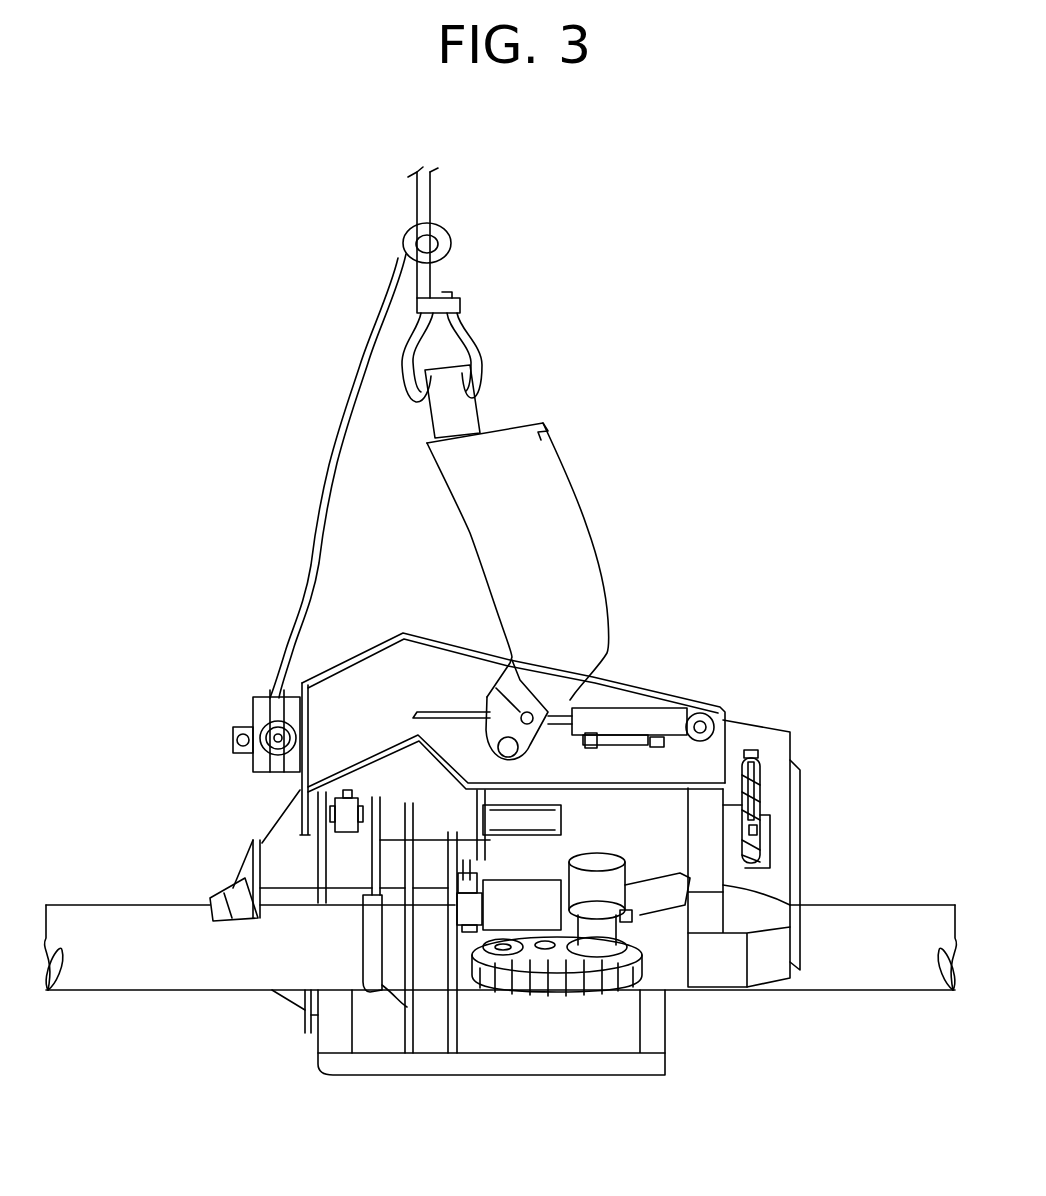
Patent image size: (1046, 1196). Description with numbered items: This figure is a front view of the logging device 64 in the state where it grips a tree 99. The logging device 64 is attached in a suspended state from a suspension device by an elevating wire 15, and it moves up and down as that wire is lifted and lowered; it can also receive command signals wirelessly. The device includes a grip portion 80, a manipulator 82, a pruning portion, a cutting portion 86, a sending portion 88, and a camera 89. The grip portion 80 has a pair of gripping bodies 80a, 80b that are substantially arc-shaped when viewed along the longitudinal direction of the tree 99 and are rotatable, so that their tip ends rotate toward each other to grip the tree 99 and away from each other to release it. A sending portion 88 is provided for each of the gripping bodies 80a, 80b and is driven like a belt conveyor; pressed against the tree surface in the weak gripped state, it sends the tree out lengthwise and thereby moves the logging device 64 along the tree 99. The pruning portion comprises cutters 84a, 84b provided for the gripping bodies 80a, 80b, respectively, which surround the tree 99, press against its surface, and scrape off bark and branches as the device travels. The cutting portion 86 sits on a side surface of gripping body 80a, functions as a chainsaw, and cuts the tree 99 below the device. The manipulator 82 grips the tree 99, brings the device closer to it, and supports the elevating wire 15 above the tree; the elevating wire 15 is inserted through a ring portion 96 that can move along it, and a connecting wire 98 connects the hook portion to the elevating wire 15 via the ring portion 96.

The elevating wire 15 is at (424, 194).
The ring portion 96 is at (451, 237).
The connecting wire 98 is at (338, 493).
The logging device 64 is at (687, 657).
The manipulator 82 is at (268, 712).
The camera 89 is at (232, 742).
The cutter 84a is at (245, 888).
The cutter 84b is at (300, 1012).
The cutting portion 86 is at (785, 868).
The tree 99 is at (893, 968).
The grip portion 80 is at (656, 1095).
The gripping body 80a is at (457, 1018).
The gripping body 80b is at (318, 1048).
The sending portion 88 is at (537, 985).